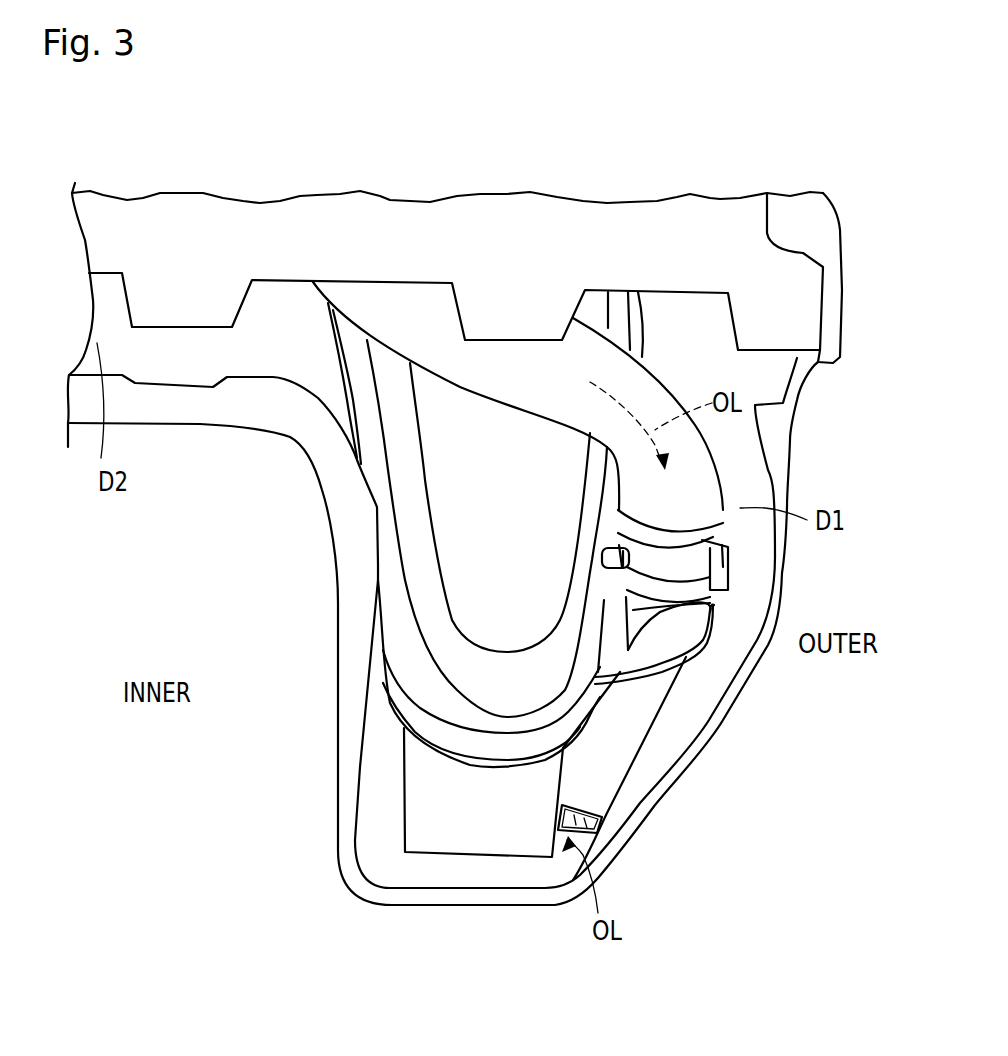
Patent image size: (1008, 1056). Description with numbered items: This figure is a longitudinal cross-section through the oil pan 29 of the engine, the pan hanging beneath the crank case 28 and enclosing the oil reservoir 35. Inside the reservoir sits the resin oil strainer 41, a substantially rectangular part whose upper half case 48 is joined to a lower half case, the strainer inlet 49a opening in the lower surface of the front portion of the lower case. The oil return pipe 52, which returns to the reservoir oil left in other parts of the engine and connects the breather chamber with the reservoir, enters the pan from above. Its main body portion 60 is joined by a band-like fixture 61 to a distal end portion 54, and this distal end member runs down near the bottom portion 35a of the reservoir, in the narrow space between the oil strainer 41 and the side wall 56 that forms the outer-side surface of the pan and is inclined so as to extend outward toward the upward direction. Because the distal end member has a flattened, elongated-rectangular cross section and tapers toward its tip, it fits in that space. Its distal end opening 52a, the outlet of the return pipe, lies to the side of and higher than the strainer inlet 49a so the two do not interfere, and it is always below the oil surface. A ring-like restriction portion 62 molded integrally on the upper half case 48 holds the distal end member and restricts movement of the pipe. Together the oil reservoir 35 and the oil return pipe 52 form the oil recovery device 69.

The crank case 28 is at (795, 290).
The oil pan 29 is at (337, 807).
The oil reservoir 35 is at (385, 755).
The bottom portion of the oil reservoir 35a is at (488, 885).
The oil strainer 41 is at (408, 524).
The upper half case 48 is at (417, 610).
The strainer inlet 49a is at (427, 855).
The oil return pipe 52 is at (726, 482).
The distal end opening (outlet) 52a is at (583, 830).
The distal end portion (distal end member) 54 is at (635, 745).
The side wall 56 is at (705, 730).
The main body portion 60 is at (655, 395).
The fixture 61 is at (730, 563).
The restriction portion 62 is at (692, 655).
The oil recovery device 69 is at (547, 573).